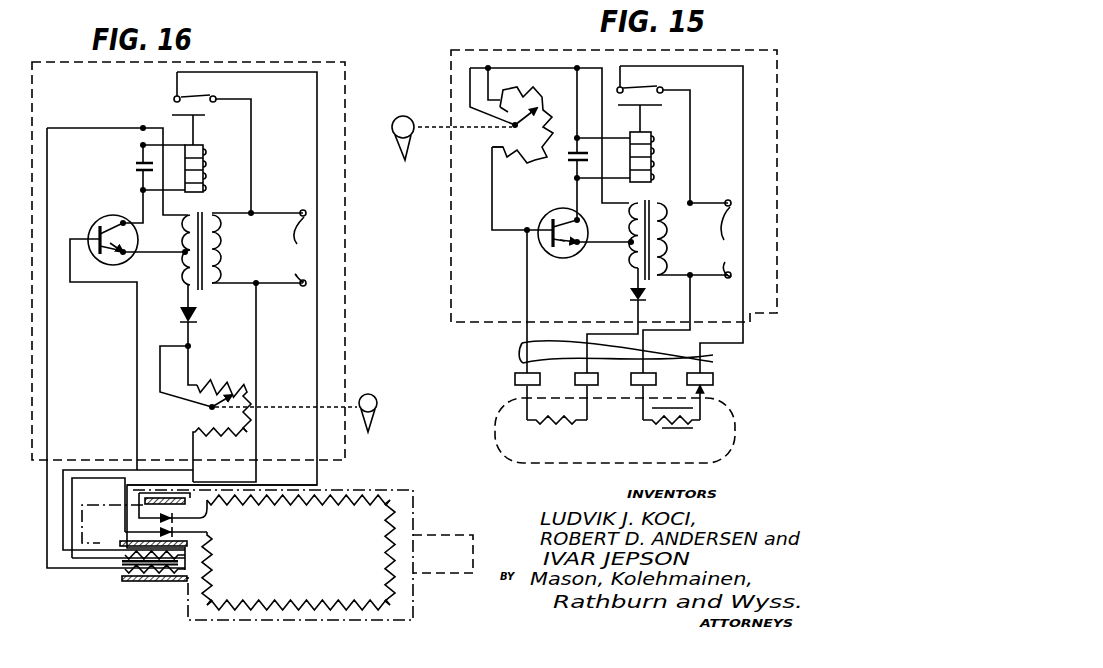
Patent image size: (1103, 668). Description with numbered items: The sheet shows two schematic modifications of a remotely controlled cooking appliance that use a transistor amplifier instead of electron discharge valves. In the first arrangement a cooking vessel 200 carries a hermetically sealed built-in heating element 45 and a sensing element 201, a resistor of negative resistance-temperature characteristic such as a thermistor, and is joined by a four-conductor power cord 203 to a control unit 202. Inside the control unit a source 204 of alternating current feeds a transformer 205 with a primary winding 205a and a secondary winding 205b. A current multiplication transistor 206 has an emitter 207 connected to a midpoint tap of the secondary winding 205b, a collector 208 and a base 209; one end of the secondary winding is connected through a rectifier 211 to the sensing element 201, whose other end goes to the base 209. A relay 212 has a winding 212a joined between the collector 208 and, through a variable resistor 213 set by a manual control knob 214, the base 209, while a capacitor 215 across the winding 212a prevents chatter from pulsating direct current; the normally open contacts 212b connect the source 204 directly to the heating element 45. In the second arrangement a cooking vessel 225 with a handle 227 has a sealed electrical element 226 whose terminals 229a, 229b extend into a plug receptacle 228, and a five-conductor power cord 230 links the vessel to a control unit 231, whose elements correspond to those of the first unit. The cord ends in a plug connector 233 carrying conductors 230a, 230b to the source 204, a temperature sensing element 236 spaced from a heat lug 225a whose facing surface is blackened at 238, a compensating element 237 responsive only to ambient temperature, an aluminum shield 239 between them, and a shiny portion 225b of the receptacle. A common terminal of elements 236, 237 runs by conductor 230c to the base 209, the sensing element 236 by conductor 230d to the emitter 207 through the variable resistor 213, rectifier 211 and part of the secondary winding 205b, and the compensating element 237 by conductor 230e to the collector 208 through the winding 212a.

In FIG. 15, the heating element 45 is at (658, 424).
In FIG. 15, the cooking vessel 200 is at (632, 424).
In FIG. 15, the sensing element 201 is at (546, 424).
In FIG. 15, the control unit 202 is at (792, 40).
In FIG. 15, the four-conductor power cord 203 is at (713, 360).
In FIG. 16, the source of alternating current 204 is at (259, 250).
In FIG. 15, the source of alternating current 204 is at (681, 239).
In FIG. 16, the transformer 205 is at (219, 239).
In FIG. 15, the transformer 205 is at (675, 234).
In FIG. 16, the primary winding 205a is at (251, 216).
In FIG. 15, the primary winding 205a is at (661, 298).
In FIG. 16, the secondary winding 205b is at (186, 283).
In FIG. 15, the secondary winding 205b is at (654, 193).
In FIG. 16, the current multiplication transistor 206 is at (110, 215).
In FIG. 15, the current multiplication transistor 206 is at (546, 216).
In FIG. 16, the emitter 207 is at (115, 262).
In FIG. 15, the emitter 207 is at (555, 257).
In FIG. 16, the collector 208 is at (119, 218).
In FIG. 15, the collector 208 is at (577, 216).
In FIG. 16, the base 209 is at (100, 232).
In FIG. 15, the base 209 is at (552, 238).
In FIG. 16, the rectifier 211 is at (192, 303).
In FIG. 15, the rectifier 211 is at (625, 292).
In FIG. 16, the relay 212 is at (204, 170).
In FIG. 15, the relay 212 is at (629, 145).
In FIG. 16, the winding 212a is at (205, 150).
In FIG. 15, the winding 212a is at (662, 130).
In FIG. 16, the contacts 212b is at (198, 87).
In FIG. 15, the contacts 212b is at (645, 81).
In FIG. 16, the variable resistor 213 is at (226, 374).
In FIG. 15, the variable resistor 213 is at (507, 148).
In FIG. 16, the manual control knob 214 is at (379, 400).
In FIG. 15, the manual control knob 214 is at (418, 118).
In FIG. 16, the capacitor 215 is at (137, 158).
In FIG. 15, the capacitor 215 is at (574, 142).
In FIG. 16, the cooking vessel 225 is at (413, 593).
In FIG. 16, the heat lug 225a is at (123, 540).
In FIG. 16, the portion of the plug receptacle 225b is at (170, 582).
In FIG. 16, the sealed electrical element 226 is at (312, 606).
In FIG. 16, the handle 227 is at (468, 534).
In FIG. 16, the plug receptacle 228 is at (170, 497).
In FIG. 16, the terminal 229a is at (197, 520).
In FIG. 16, the terminal 229b is at (186, 536).
In FIG. 16, the five-conductor power cord 230 is at (125, 497).
In FIG. 16, the conductor 230a is at (262, 472).
In FIG. 16, the conductor 230b is at (319, 478).
In FIG. 16, the conductor 230c is at (125, 462).
In FIG. 16, the conductor 230d is at (193, 436).
In FIG. 16, the conductor 230e is at (47, 545).
In FIG. 16, the control unit 231 is at (333, 60).
In FIG. 16, the plug connector 233 is at (100, 537).
In FIG. 16, the temperature sensing element 236 is at (143, 559).
In FIG. 16, the compensating element 237 is at (118, 573).
In FIG. 16, the blackened surface 238 is at (182, 553).
In FIG. 16, the shield 239 is at (182, 564).